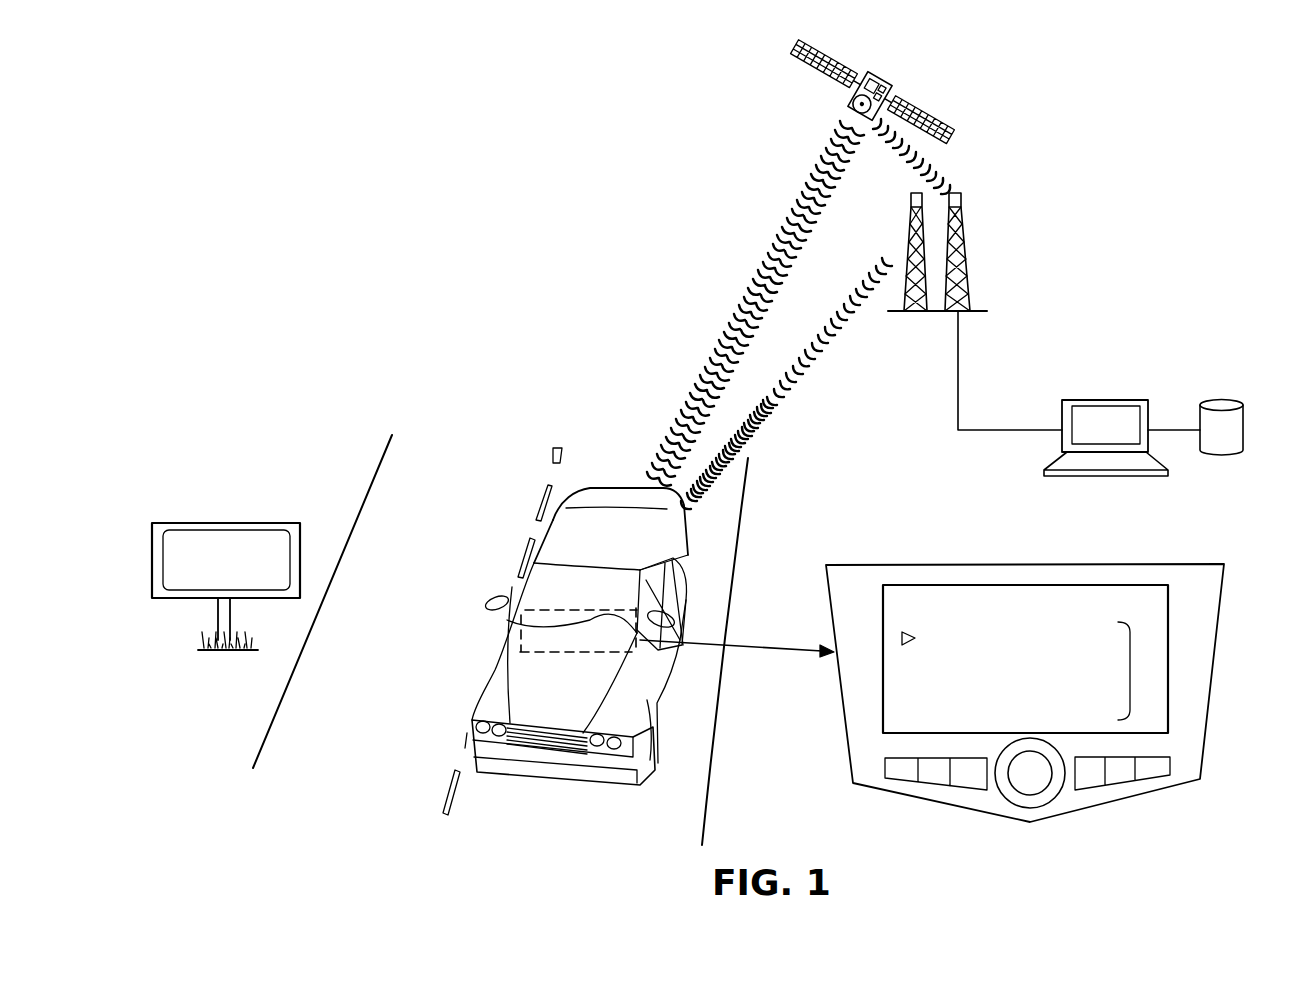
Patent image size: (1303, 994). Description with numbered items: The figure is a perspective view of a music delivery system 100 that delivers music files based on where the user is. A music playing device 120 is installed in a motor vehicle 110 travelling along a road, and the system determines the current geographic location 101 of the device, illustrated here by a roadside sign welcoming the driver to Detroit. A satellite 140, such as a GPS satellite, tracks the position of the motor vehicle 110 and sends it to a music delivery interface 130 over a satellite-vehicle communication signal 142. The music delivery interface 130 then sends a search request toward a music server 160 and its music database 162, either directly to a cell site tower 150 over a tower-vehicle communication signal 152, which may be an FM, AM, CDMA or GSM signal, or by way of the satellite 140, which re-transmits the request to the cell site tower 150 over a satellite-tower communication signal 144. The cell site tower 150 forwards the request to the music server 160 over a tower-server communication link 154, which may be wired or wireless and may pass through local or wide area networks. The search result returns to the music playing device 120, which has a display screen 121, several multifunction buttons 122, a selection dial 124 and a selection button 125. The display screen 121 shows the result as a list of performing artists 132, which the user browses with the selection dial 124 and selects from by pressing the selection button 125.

The music delivery system 100 is at (421, 164).
The current geographic location 101 is at (270, 523).
The motor vehicle 110 is at (548, 535).
The music playing device 120 is at (1224, 603).
The display screen 121 is at (900, 585).
The multifunction buttons 122 is at (940, 785).
The selection dial 124 is at (1045, 808).
The selection button 125 is at (1025, 785).
The music delivery interface 130 is at (1102, 590).
The list of performing artists 132 is at (1130, 675).
The satellite 140 is at (883, 75).
The satellite-vehicle communication signal 142 is at (682, 398).
The satellite-tower communication signal 144 is at (933, 173).
The cell site tower 150 is at (961, 213).
The tower-vehicle communication signal 152 is at (780, 393).
The tower-server communication link 154 is at (992, 428).
The music server 160 is at (1130, 398).
The music database 162 is at (1217, 398).